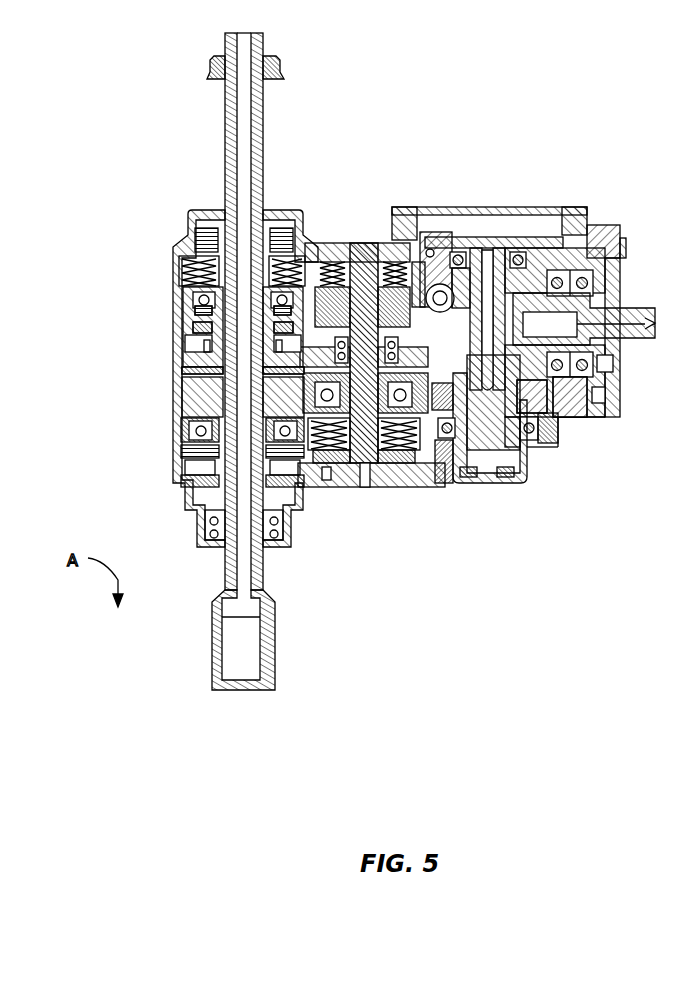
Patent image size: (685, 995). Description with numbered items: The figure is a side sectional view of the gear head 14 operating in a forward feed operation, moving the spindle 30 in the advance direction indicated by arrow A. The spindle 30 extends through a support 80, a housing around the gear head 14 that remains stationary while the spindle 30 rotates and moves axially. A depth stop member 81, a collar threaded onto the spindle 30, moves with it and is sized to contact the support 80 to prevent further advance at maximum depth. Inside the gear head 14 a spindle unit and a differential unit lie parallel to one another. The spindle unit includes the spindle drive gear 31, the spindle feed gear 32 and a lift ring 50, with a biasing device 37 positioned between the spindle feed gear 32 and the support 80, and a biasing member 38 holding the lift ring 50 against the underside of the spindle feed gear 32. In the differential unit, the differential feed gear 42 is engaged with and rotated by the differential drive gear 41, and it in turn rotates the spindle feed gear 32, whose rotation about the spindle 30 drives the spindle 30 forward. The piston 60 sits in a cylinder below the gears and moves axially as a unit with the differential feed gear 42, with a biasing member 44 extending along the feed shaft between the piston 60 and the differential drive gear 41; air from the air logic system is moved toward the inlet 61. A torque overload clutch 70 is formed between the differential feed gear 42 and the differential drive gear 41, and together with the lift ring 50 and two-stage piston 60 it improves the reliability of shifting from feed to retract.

The gear head 14 is at (358, 155).
The spindle 30 is at (223, 583).
The spindle drive gear 31 is at (197, 403).
The spindle feed gear 32 is at (197, 347).
The biasing device 37 is at (188, 274).
The biasing member 38 is at (187, 488).
The differential drive gear 41 is at (322, 400).
The differential feed gear 42 is at (313, 357).
The biasing member 44 is at (447, 470).
The lift ring 50 is at (192, 372).
The piston 60 is at (405, 445).
The inlet 61 is at (390, 470).
The torque overload clutch 70 is at (440, 368).
The support 80 is at (197, 231).
The depth stop member 81 is at (210, 65).